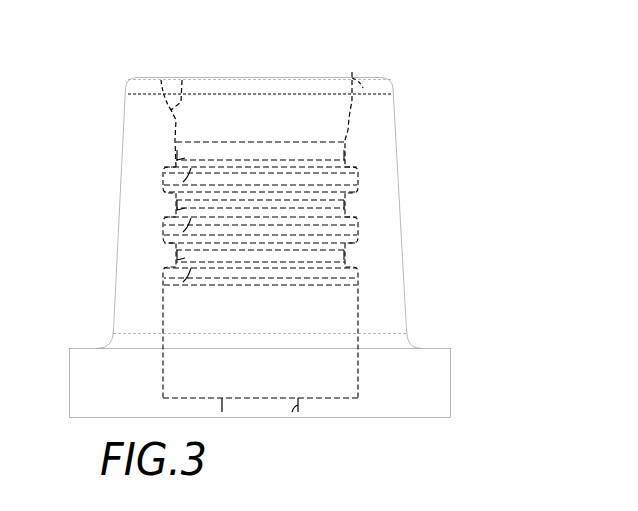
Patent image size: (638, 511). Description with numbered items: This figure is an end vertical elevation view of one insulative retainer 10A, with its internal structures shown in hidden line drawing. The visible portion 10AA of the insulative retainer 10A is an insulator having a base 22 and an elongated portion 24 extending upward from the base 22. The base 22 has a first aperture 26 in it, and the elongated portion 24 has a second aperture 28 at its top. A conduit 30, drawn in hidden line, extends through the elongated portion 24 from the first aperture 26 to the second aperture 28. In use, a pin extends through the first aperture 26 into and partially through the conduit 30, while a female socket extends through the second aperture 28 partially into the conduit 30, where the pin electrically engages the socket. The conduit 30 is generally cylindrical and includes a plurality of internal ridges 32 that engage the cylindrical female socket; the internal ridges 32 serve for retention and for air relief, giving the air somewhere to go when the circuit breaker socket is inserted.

The insulative retainer 10A is at (91, 132).
The insulative retainer portion 10AA is at (398, 128).
The base 22 is at (69, 387).
The elongated portion 24 is at (405, 258).
The first aperture 26 is at (298, 417).
The second aperture 28 is at (353, 70).
The conduit 30 is at (182, 80).
The internal ridges 32 is at (152, 183).